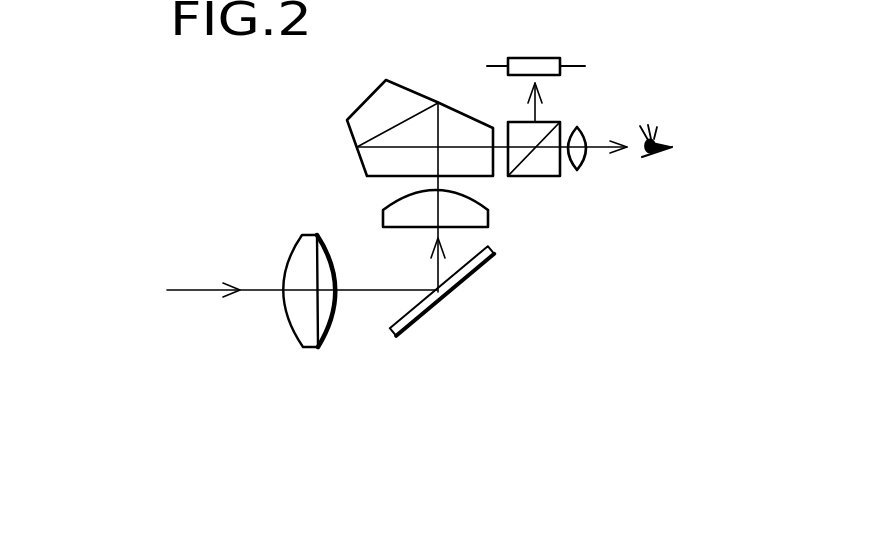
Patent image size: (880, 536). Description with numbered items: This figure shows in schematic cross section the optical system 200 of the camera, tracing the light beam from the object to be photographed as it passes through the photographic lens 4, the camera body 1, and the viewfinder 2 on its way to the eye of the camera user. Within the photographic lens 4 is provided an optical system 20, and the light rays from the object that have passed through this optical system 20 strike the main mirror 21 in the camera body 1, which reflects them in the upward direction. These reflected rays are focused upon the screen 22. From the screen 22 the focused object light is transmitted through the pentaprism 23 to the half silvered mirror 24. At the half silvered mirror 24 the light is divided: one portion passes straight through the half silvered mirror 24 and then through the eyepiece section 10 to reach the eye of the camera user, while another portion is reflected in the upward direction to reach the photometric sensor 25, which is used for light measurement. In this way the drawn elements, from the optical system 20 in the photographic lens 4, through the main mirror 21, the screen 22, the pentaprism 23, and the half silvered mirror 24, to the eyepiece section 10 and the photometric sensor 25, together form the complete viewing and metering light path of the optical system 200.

The optical system 200 is at (242, 170).
The viewfinder 2 is at (458, 82).
The pentaprism 23 is at (362, 112).
The screen 22 is at (478, 213).
The half silvered mirror 24 is at (550, 165).
The photometric sensor 25 is at (550, 58).
The eyepiece section 10 is at (583, 135).
The camera body 1 is at (518, 353).
The main mirror 21 is at (485, 262).
The photographic lens 4 is at (307, 402).
The optical system 20 is at (307, 340).